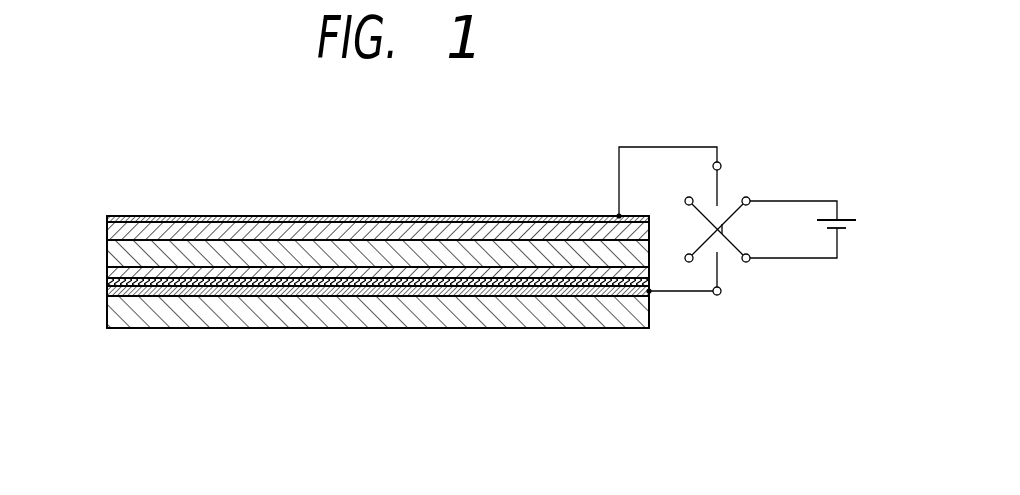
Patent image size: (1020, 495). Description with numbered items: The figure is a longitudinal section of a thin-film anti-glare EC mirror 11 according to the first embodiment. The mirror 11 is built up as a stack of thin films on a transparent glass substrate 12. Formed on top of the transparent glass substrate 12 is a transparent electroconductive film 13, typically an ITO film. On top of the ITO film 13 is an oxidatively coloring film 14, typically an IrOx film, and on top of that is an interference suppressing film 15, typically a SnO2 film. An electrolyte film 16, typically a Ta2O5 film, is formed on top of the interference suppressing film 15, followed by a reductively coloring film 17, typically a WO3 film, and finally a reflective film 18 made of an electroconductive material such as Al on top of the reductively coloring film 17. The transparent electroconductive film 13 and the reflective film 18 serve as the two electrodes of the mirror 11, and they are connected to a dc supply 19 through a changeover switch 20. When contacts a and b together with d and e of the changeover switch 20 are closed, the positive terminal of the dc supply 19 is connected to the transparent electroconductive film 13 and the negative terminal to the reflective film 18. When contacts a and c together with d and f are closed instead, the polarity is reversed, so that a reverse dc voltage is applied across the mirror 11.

The thin-film anti-glare EC mirror 11 is at (333, 225).
The transparent glass substrate 12 is at (107, 312).
The transparent electroconductive film 13 is at (107, 291).
The oxidatively coloring film 14 is at (107, 282).
The interference suppressing film 15 is at (107, 272).
The electrolyte film 16 is at (107, 253).
The reductively coloring film 17 is at (107, 231).
The reflective film 18 is at (107, 219).
The dc supply 19 is at (843, 213).
The changeover switch 20 is at (730, 186).